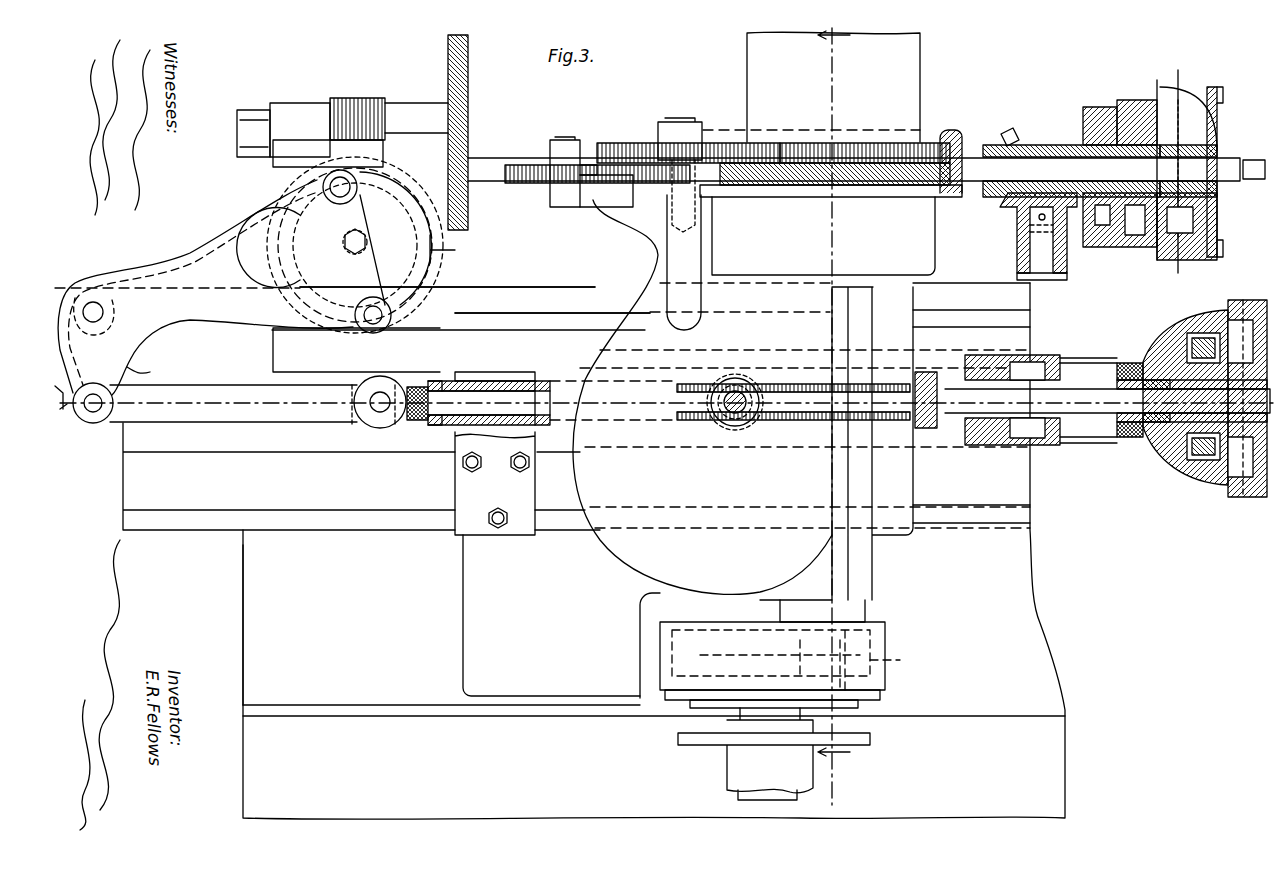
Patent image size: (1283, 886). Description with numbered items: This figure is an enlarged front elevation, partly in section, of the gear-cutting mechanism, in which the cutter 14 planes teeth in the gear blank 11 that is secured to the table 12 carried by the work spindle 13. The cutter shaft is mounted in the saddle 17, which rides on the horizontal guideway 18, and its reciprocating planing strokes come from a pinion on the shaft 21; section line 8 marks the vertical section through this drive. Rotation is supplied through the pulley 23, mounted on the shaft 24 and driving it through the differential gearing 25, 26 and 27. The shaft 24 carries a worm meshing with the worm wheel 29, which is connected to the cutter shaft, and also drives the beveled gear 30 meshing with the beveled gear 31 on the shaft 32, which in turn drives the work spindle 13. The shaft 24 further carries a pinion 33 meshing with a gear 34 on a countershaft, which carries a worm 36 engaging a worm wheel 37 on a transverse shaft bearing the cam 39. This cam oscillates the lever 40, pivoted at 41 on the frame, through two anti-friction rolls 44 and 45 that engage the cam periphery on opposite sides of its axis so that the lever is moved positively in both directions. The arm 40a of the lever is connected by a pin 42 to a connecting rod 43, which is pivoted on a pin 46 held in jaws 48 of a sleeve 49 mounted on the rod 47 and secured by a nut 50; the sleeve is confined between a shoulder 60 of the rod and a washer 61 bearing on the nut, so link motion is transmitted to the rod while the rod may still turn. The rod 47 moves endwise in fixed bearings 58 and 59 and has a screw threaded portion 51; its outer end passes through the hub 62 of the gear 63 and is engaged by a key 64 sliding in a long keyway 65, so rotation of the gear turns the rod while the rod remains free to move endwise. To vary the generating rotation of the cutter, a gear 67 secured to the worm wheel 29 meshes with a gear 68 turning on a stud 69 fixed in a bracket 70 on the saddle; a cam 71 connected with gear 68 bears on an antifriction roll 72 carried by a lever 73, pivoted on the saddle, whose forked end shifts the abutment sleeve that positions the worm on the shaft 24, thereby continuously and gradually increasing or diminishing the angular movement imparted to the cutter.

The section line 8— 8 is at (834, 396).
The gear blank 11 is at (895, 636).
The table 12 is at (670, 697).
The spindle 13 is at (740, 706).
The cutter 14 is at (900, 659).
The saddle 17 is at (741, 397).
The horizontal guideway 18 is at (405, 500).
The shaft 21 is at (602, 330).
The pulley 23 is at (1130, 105).
The shaft 24 is at (492, 158).
The differential gearing 25 is at (1170, 250).
The differential gearing 26 is at (1198, 140).
The differential gearing 27 is at (1205, 160).
The worm wheel 29 is at (965, 128).
The beveled gear 30 is at (1013, 128).
The beveled gear 31 is at (1003, 207).
The shaft 32 is at (1050, 278).
The pinion 33 is at (480, 195).
The gear 34 is at (468, 58).
The worm 36 is at (352, 97).
The worm wheel 37 is at (420, 285).
The cam 39 is at (432, 243).
The lever 40 is at (244, 240).
The arm 40a is at (118, 375).
The pivot 41 is at (103, 312).
The pin 42 is at (92, 410).
The connecting rod 43 is at (228, 415).
The anti-friction roll 44 is at (357, 182).
The anti-friction roll 45 is at (378, 333).
The pin 46 is at (378, 410).
The rod 47 is at (573, 390).
The jaws 48 is at (415, 425).
The sleeve 49 is at (452, 430).
The nut 50 is at (433, 381).
The screw threaded portion 51 is at (950, 370).
The fixed bearing 58 is at (500, 372).
The fixed bearing 59 is at (1000, 370).
The shoulder 60 is at (560, 375).
The washer 61 is at (448, 381).
The sleeve or hub 62 is at (1160, 440).
The gear 63 is at (1255, 290).
The key 64 is at (1150, 365).
The keyway 65 is at (1075, 385).
The gear 67 is at (792, 143).
The gear 68 is at (638, 142).
The stud 69 is at (690, 115).
The bracket 70 is at (665, 245).
The cam 71 is at (650, 183).
The antifriction roll 72 is at (535, 200).
The lever 73 is at (600, 200).